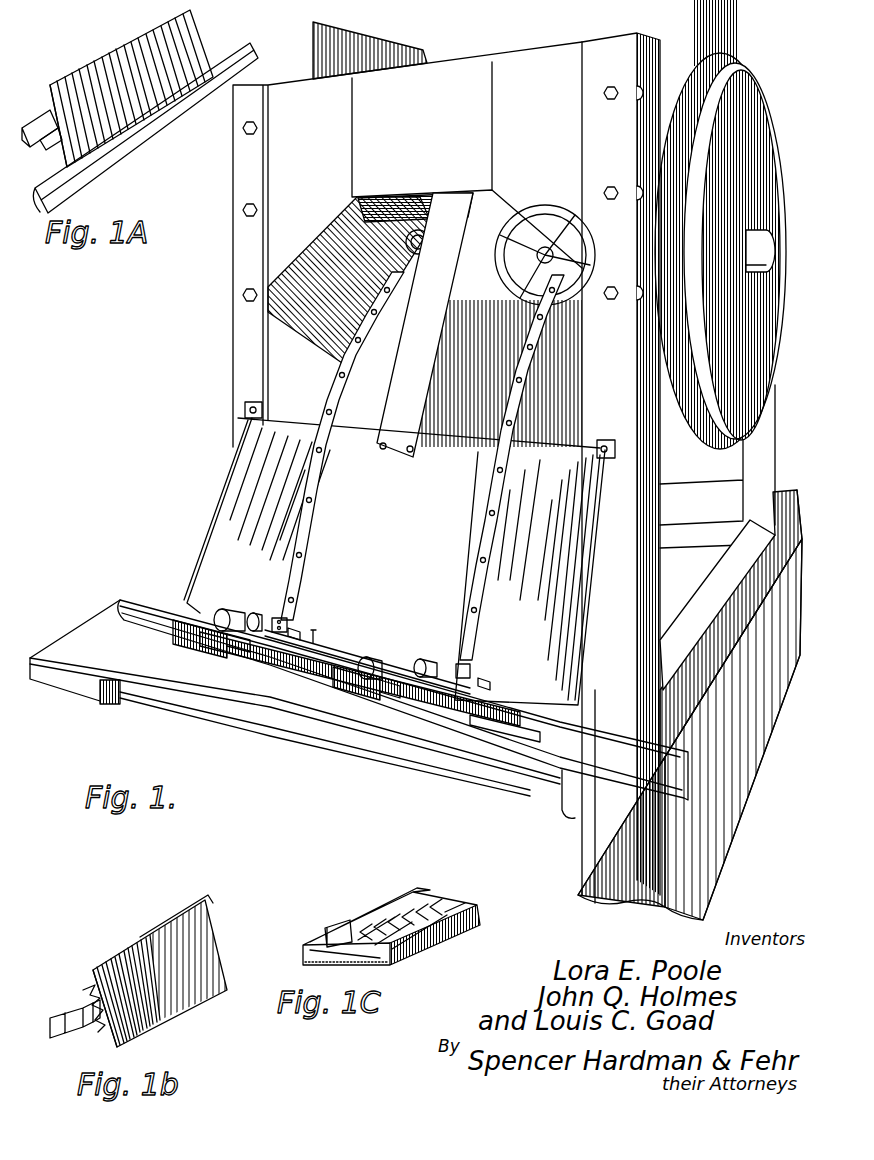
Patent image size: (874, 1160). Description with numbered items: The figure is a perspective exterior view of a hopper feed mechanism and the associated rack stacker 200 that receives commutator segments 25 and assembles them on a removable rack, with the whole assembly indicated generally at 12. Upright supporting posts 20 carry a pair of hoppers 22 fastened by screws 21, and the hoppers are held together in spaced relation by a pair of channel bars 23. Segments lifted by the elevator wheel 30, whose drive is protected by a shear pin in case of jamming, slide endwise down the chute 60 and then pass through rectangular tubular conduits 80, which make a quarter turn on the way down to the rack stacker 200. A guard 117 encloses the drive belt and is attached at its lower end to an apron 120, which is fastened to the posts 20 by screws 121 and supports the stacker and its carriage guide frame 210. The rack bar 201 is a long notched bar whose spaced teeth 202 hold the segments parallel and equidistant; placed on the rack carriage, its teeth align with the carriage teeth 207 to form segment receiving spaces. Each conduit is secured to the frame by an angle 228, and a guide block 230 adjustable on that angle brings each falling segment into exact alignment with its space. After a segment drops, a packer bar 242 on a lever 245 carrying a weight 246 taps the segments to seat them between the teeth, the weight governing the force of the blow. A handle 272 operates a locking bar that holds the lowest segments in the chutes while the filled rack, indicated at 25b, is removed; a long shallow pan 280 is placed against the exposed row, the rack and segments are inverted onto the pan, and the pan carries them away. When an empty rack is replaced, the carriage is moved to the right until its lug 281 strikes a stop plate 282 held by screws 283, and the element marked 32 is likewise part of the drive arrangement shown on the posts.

In FIG. 1, the conveyor assembly 12 is at (130, 573).
In FIG. 1, the supporting posts 20 is at (243, 175).
In FIG. 1, the screws 21 is at (643, 88).
In FIG. 1, the hoppers 22 is at (290, 93).
In FIG. 1, the channel bars 23 is at (448, 73).
In FIG. 1, the elevator wheel 30 is at (755, 387).
In FIG. 1, the hub 32 is at (762, 233).
In FIG. 1, the chute 60 is at (560, 312).
In FIG. 1, the tubular conduits 80 is at (296, 540).
In FIG. 1, the guard 117 is at (477, 337).
In FIG. 1, the apron 120 is at (612, 522).
In FIG. 1, the screws 121 is at (247, 410).
In FIG. 1, the rack stacker 200 is at (410, 816).
In FIG. 1A, the rack bar 201 is at (30, 125).
In FIG. 1, the rack bar 201 is at (517, 740).
In FIG. 1B, the rack bar 201 is at (58, 1033).
In FIG. 1C, the rack bar 201 is at (350, 925).
In FIG. 1A, the rack teeth 202 is at (52, 153).
In FIG. 1B, the rack teeth 202 is at (90, 1030).
In FIG. 1C, the rack teeth 202 is at (464, 898).
In FIG. 1, the carriage teeth 207 is at (497, 710).
In FIG. 1, the carriage guide frame 210 is at (593, 772).
In FIG. 1, the angle 228 is at (287, 620).
In FIG. 1, the guide block 230 is at (290, 637).
In FIG. 1, the packer bar 242 is at (250, 647).
In FIG. 1, the lever 245 is at (245, 612).
In FIG. 1, the weight 246 is at (220, 616).
In FIG. 1, the handle 272 is at (320, 633).
In FIG. 1B, the commutator segments 25 is at (87, 1000).
In FIG. 1C, the commutator segments 25 is at (310, 950).
In FIG. 1, the filled rack of segments 25b is at (203, 647).
In FIG. 1B, the pan 280 is at (160, 971).
In FIG. 1C, the pan 280 is at (420, 936).
In FIG. 1, the lug 281 is at (547, 752).
In FIG. 1, the stop plate 282 is at (693, 777).
In FIG. 1, the screws 283 is at (685, 752).